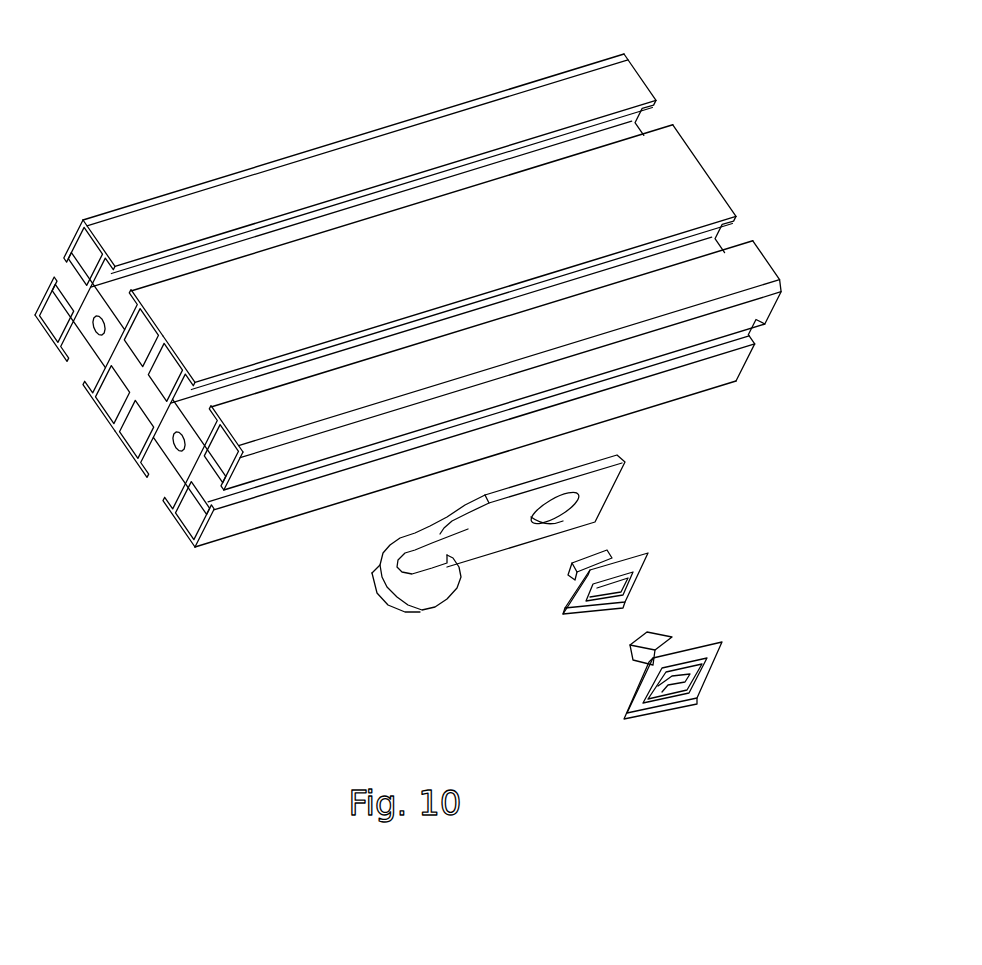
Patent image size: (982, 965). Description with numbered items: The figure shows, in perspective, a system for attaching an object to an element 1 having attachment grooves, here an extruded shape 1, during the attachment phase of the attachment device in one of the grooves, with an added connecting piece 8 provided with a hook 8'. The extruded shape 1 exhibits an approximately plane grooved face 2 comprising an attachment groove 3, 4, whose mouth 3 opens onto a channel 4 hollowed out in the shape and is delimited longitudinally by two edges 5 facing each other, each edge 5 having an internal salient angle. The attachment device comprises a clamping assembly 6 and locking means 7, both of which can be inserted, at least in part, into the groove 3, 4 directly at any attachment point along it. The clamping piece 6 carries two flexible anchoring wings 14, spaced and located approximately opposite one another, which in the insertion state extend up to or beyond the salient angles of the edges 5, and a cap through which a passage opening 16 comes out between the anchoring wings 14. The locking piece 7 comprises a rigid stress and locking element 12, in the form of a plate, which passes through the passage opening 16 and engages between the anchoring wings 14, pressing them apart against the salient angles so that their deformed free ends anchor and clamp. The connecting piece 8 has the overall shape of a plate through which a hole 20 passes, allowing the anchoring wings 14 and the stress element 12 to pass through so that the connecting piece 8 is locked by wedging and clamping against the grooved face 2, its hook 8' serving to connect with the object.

The element having attachment grooves 1 is at (420, 339).
The grooved face 2 is at (228, 521).
The mouth of the attachment groove 3 is at (698, 358).
The channel 4 is at (220, 478).
The edges 5 is at (212, 482).
The clamping assembly 6 is at (620, 574).
The locking means 7 is at (729, 683).
The connecting piece 8 is at (511, 557).
The hook 8' is at (345, 583).
The stress and locking element 12 is at (678, 647).
The anchoring wings 14 is at (627, 553).
The passage opening 16 is at (630, 594).
The hole 20 is at (551, 522).